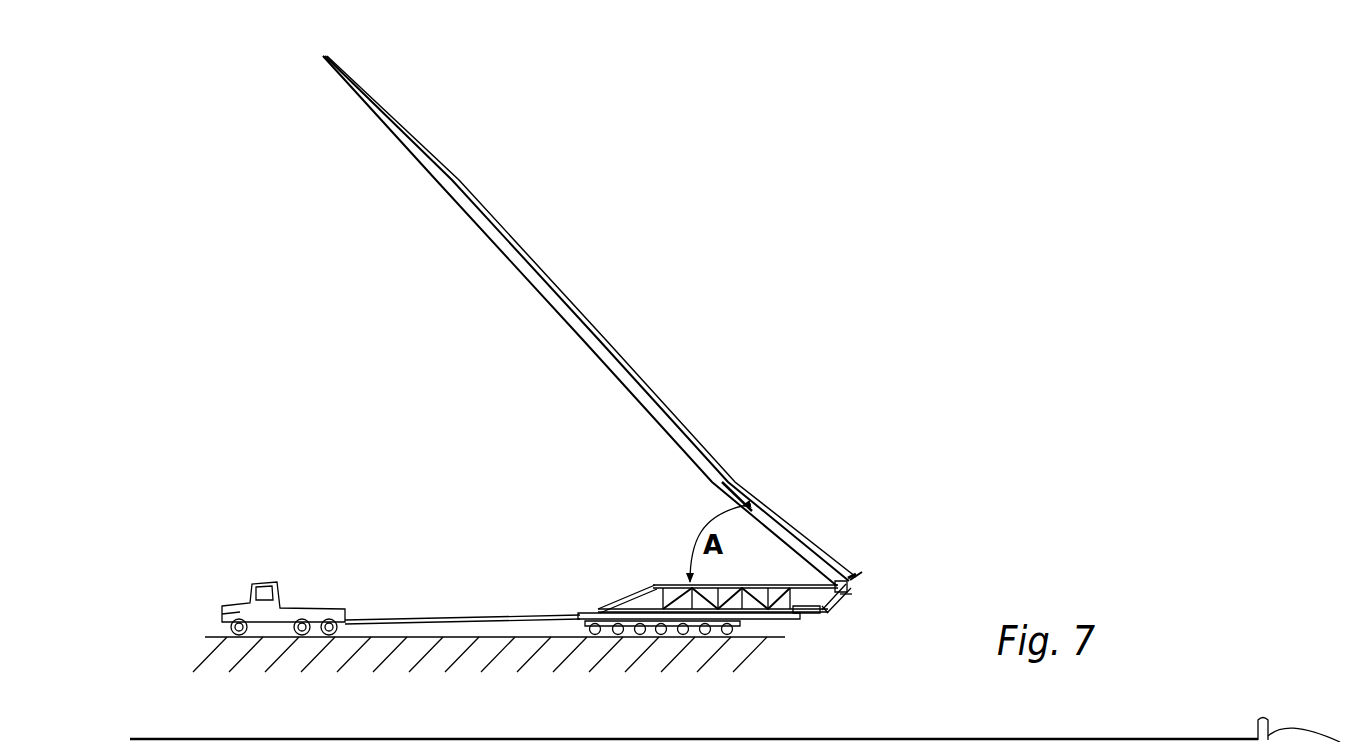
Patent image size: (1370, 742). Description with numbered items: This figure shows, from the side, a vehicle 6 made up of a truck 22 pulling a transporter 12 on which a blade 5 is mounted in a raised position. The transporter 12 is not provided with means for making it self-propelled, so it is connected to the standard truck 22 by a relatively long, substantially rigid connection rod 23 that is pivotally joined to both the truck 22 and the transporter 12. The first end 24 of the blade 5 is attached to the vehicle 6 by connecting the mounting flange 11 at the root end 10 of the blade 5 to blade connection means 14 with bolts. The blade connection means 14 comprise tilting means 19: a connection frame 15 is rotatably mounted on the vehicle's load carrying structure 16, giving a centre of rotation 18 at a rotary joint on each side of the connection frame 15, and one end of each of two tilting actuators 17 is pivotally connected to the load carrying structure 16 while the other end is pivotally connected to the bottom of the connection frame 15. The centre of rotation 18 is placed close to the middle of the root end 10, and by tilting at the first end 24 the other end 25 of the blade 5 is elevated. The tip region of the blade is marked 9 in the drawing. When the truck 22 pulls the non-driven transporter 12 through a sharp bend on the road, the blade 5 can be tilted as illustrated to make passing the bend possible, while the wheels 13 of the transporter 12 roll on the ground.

The blade 5 is at (560, 292).
The vehicle 6 is at (245, 419).
The mast tip 9 is at (323, 56).
The root end 10 is at (852, 570).
The mounting flange 11 is at (849, 582).
The transporter 12 is at (627, 640).
The bogie 13 is at (700, 640).
The blade connection means 14 is at (843, 606).
The connection frame 15 is at (858, 578).
The load carrying structure 16 is at (675, 583).
The tilting actuators 17 is at (782, 626).
The centre of rotation 18 is at (843, 567).
The tilting means 19 is at (823, 618).
The truck 22 is at (268, 601).
The connection rod 23 is at (512, 616).
The first end of the blade 24 is at (838, 562).
The other end of the blade 25 is at (342, 90).